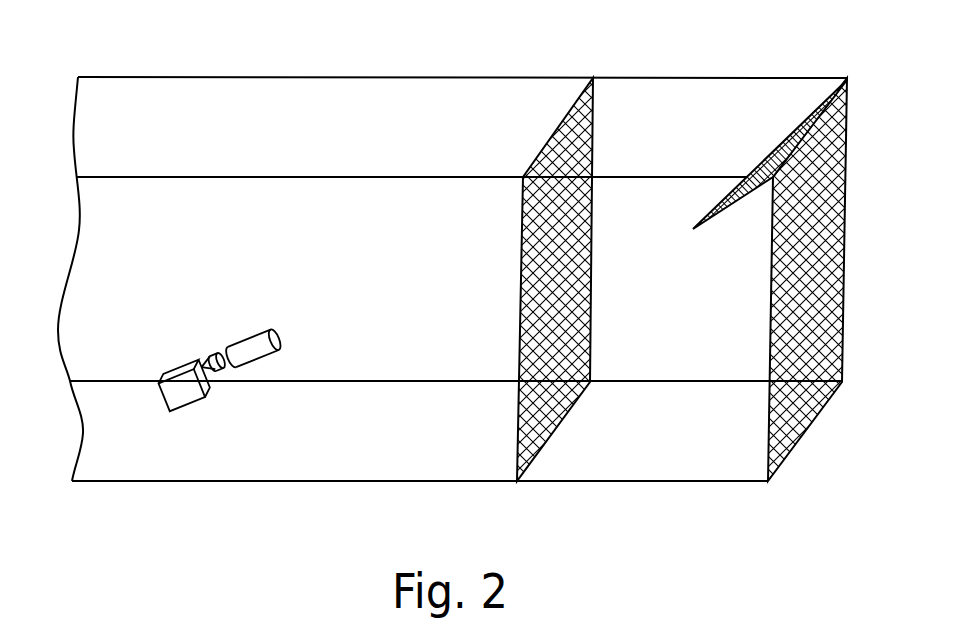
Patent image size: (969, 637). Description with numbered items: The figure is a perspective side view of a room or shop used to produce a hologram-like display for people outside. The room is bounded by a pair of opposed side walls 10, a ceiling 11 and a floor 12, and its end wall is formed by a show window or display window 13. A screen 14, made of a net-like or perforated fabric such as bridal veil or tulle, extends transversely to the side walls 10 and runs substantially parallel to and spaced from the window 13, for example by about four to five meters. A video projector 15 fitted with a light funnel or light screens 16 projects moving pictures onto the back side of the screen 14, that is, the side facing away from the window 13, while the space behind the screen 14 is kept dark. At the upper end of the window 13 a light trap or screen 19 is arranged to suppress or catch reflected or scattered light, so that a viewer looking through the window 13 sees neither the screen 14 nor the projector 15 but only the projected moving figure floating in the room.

The side walls 10 is at (90, 263).
The ceiling 11 is at (253, 118).
The floor 12 is at (608, 460).
The show window 13 is at (843, 222).
The screen 14 is at (600, 108).
The video projector 15 is at (175, 395).
The light funnel 16 is at (265, 352).
The light trap 19 is at (767, 130).